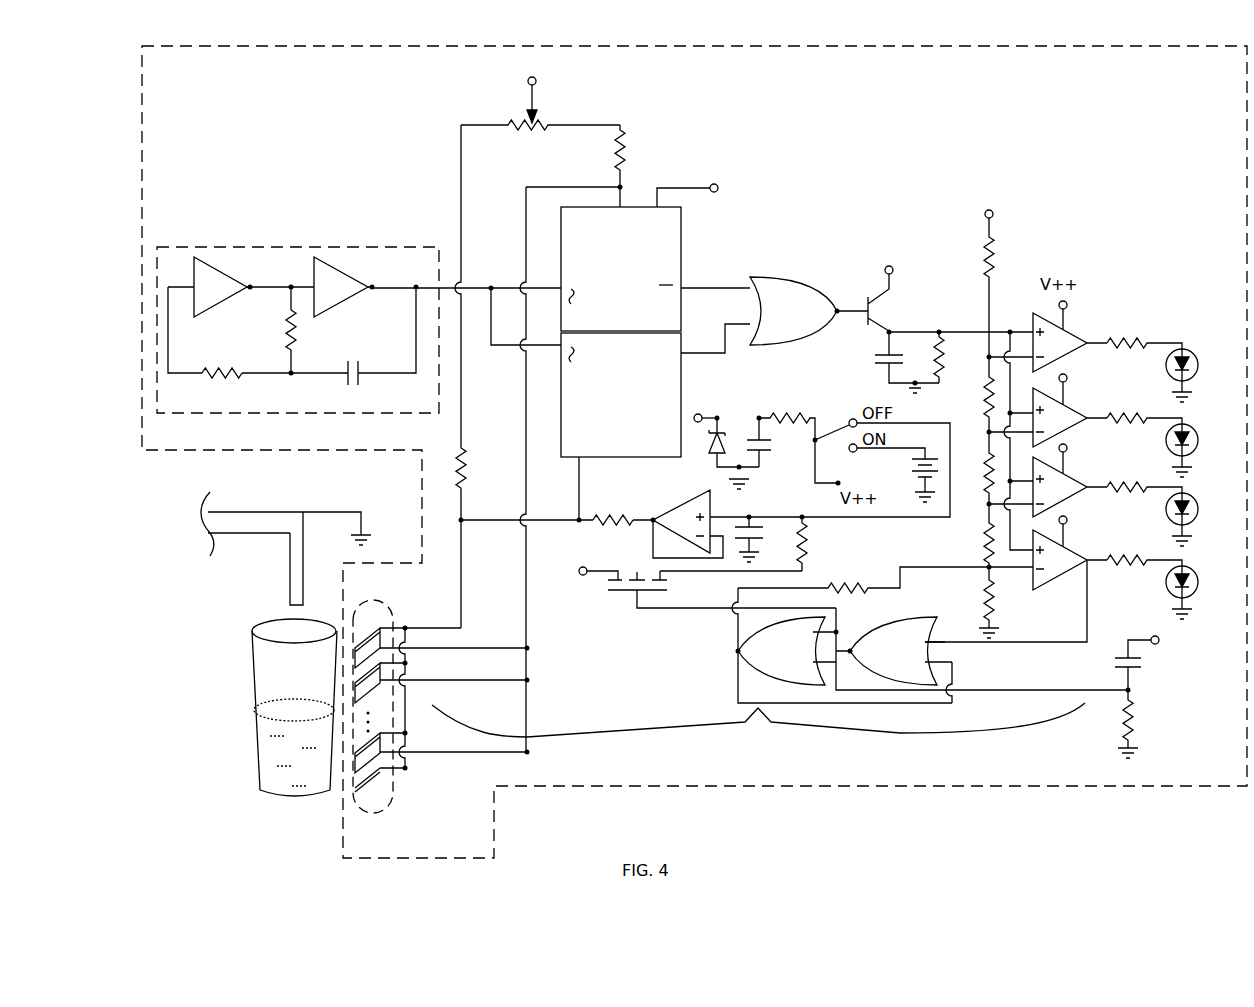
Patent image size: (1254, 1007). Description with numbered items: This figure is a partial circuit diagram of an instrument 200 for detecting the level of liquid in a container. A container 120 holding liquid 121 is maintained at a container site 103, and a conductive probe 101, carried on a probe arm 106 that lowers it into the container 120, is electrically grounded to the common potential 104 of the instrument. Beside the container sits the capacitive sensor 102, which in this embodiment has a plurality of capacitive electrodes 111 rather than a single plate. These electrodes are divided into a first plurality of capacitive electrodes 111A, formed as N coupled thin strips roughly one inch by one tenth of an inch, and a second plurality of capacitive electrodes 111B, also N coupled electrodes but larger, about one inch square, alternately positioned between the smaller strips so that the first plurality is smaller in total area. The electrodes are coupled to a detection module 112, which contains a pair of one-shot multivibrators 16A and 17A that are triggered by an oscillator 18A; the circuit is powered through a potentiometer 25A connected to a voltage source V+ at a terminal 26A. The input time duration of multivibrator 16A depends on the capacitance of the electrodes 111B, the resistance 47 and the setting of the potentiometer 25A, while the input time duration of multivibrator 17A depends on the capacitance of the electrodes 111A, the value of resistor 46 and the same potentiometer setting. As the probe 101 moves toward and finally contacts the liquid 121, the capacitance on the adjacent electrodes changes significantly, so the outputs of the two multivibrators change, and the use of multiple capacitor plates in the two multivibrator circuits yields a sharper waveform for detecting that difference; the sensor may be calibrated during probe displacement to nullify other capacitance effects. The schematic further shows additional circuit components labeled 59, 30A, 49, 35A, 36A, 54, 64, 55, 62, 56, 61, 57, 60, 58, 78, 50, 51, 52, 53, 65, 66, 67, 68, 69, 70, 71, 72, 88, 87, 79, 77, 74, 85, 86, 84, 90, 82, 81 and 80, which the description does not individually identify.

The instrument 200 is at (118, 69).
The capacitive sensor 102 is at (142, 183).
The terminal 26A is at (528, 81).
The potentiometer 25A is at (530, 130).
The resistance 47 is at (626, 152).
The supply voltage terminal V+ 59 is at (716, 184).
The oscillator 18A is at (398, 247).
The one-shot multivibrator 16A is at (681, 242).
The one-shot multivibrator 17A is at (683, 388).
The OR gate 30A is at (760, 277).
The transistor 49 is at (880, 309).
The capacitor 35A is at (876, 359).
The resistor 36A is at (946, 372).
The resistor 54 is at (985, 262).
The resistor 64 is at (987, 372).
The reference node 55 is at (988, 430).
The resistor 62 is at (987, 460).
The reference node 56 is at (988, 503).
The resistor 61 is at (987, 530).
The reference node 57 is at (988, 566).
The resistor 60 is at (987, 597).
The ground connection 58 is at (986, 622).
The supply voltage terminal V++ 78 is at (1070, 303).
The comparator 50 is at (1072, 352).
The comparator 51 is at (1072, 427).
The comparator 52 is at (1072, 497).
The comparator 53 is at (1077, 573).
The resistor 65 is at (1123, 338).
The resistor 66 is at (1123, 413).
The resistor 67 is at (1123, 482).
The resistor 68 is at (1123, 555).
The light emitting diode 69 is at (1195, 373).
The light emitting diode 70 is at (1195, 448).
The light emitting diode 71 is at (1195, 518).
The light emitting diode 72 is at (1195, 590).
The resistor 46 is at (466, 466).
The resistor 88 is at (612, 516).
The amplifier / battery 87 is at (672, 492).
The zener diode 79 is at (712, 436).
The resistor 77 is at (785, 418).
The switch 74 is at (822, 436).
The capacitor 85 is at (760, 536).
The resistor 86 is at (812, 558).
The transistor 84 is at (612, 590).
The resistor 90 is at (857, 588).
The OR gate 82 is at (782, 627).
The OR gate / resistor 81 is at (912, 618).
The capacitor 80 is at (1141, 663).
The detection module 112 is at (758, 726).
The probe arm 106 is at (247, 512).
The common potential 104 is at (392, 524).
The probe 101 is at (290, 548).
The capacitive electrodes 111 is at (380, 603).
The first plurality of capacitive electrodes 111A is at (368, 782).
The second plurality of capacitive electrodes 111B is at (357, 765).
The container 120 is at (258, 660).
The liquid 121 is at (258, 743).
The container site 103 is at (270, 822).